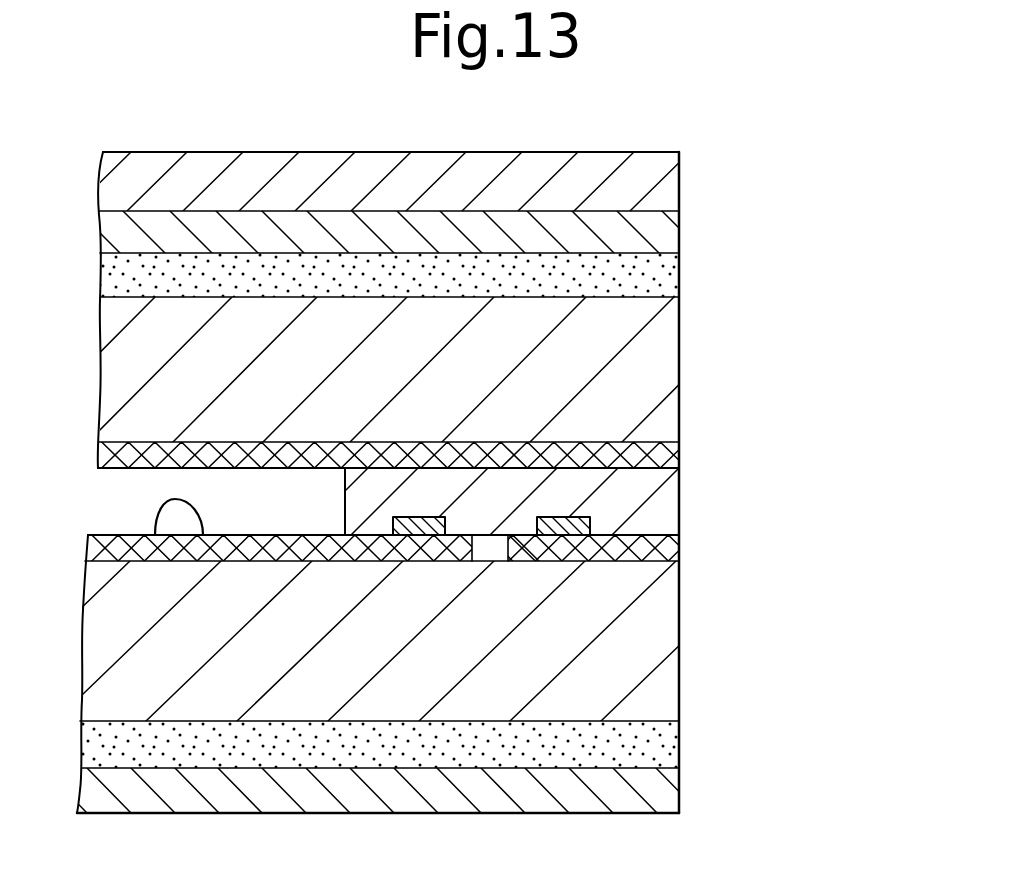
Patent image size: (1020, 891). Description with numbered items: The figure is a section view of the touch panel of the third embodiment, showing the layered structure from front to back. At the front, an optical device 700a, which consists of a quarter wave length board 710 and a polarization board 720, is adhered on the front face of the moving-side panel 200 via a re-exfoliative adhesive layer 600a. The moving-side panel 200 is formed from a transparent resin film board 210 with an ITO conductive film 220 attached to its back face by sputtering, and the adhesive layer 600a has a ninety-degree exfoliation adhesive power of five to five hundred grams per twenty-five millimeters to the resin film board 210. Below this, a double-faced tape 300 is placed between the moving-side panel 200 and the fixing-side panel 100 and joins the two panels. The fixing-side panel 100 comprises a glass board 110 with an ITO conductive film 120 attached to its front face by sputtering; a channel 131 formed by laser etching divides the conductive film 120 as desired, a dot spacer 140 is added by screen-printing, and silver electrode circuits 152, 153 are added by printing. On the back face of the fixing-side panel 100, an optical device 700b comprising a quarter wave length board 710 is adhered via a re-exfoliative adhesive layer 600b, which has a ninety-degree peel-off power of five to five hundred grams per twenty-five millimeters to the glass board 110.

The fixing-side panel 100 is at (432, 700).
The glass board 110 is at (640, 641).
The ITO conductive film 120 is at (440, 700).
The channel 131 is at (488, 552).
The dot spacer 140 is at (168, 517).
The silver electrode circuit 152 is at (410, 517).
The silver electrode circuit 153 is at (574, 517).
The moving-side panel 200 is at (436, 378).
The transparent resin film board 210 is at (642, 357).
The ITO conductive film 220 is at (663, 457).
The double-faced tape 300 is at (627, 506).
The re-exfoliative adhesive layer 600a is at (647, 287).
The re-exfoliative adhesive layer 600b is at (658, 745).
The optical device 700a is at (482, 186).
The optical device 700b is at (658, 797).
The quarter wave length board 710 is at (657, 237).
The polarization board 720 is at (657, 200).